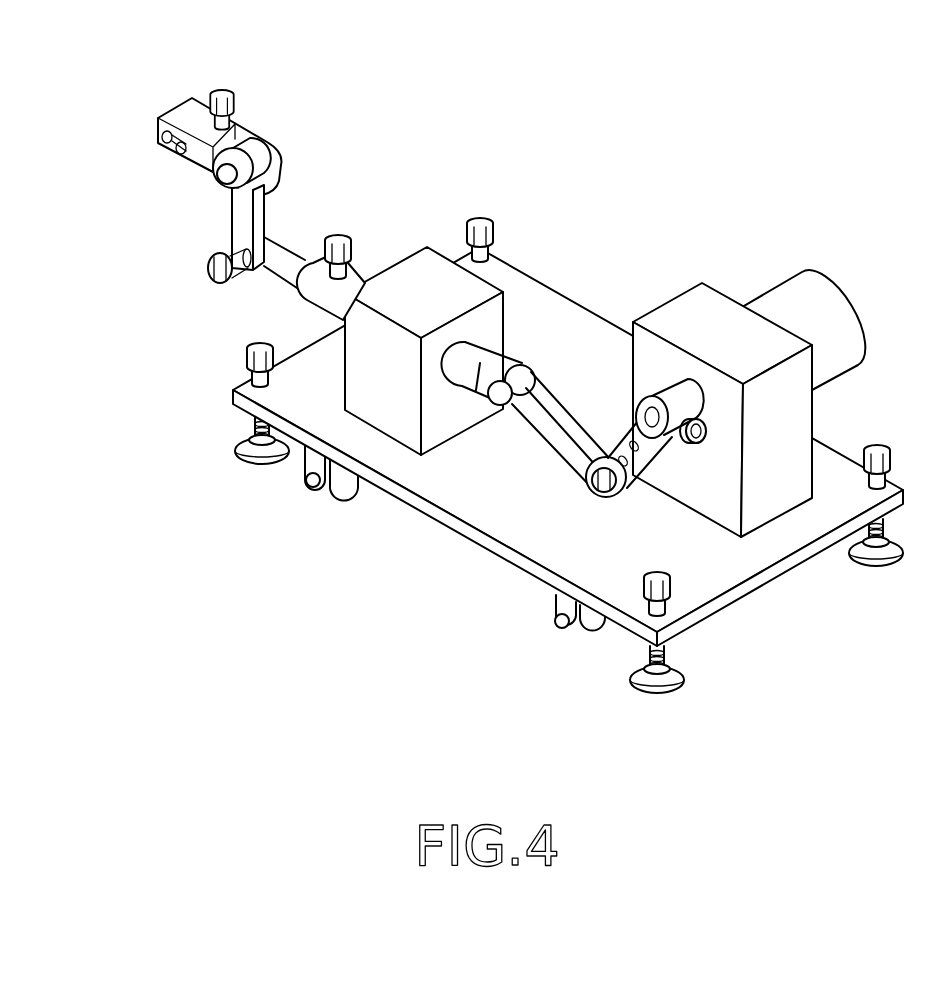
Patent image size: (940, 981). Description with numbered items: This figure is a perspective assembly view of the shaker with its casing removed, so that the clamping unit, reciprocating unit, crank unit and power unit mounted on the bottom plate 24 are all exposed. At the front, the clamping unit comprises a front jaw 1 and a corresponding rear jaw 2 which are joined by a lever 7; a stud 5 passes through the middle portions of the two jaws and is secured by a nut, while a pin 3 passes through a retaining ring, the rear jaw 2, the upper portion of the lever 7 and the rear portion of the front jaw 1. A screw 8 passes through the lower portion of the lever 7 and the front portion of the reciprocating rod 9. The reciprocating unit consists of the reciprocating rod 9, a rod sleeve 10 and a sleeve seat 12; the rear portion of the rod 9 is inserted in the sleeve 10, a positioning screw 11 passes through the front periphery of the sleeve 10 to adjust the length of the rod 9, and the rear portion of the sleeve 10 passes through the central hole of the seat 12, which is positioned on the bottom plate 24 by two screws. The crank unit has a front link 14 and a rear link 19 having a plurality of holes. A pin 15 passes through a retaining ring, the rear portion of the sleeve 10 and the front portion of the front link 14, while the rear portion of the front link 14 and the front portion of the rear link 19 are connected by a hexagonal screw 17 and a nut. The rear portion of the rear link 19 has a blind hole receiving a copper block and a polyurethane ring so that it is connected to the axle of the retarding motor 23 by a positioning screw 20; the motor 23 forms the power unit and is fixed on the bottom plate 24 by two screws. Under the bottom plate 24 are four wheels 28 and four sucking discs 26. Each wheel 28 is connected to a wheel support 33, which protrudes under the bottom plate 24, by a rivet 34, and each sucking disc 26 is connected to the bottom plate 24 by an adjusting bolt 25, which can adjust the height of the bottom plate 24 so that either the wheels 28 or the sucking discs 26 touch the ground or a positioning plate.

The front jaw 1 is at (167, 110).
The rear jaw 2 is at (158, 143).
The pin 3 is at (213, 185).
The stud 5 is at (207, 88).
The lever 7 is at (237, 220).
The screw 8 is at (213, 275).
The reciprocating rod 9 is at (287, 240).
The rod sleeve 10 is at (298, 291).
The positioning screw 11 is at (340, 234).
The sleeve seat 12 is at (430, 245).
The front link 14 is at (562, 407).
The pin 15 is at (493, 412).
The hexagonal screw 17 is at (593, 490).
The rear link 19 is at (645, 460).
The positioning screw 20 is at (702, 440).
The retarding motor 23 is at (828, 290).
The bottom plate 24 is at (547, 307).
The adjusting bolt 25 is at (243, 362).
The sucking disc 26 is at (245, 475).
The wheel 28 is at (352, 490).
The wheel support 33 is at (555, 605).
The rivet 34 is at (308, 490).